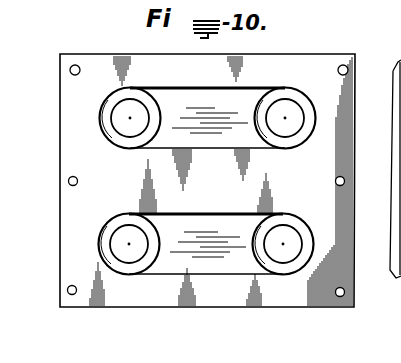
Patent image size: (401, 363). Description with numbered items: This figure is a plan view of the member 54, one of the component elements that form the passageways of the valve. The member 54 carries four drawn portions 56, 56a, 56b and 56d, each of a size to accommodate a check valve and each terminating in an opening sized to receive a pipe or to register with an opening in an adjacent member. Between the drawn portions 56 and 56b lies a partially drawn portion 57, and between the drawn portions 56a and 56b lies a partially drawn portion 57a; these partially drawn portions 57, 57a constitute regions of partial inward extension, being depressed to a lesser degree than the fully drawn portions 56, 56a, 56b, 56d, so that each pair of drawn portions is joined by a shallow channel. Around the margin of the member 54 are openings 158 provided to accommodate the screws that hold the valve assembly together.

The member 54 is at (313, 62).
The drawn portion 56 is at (276, 106).
The drawn portion 56a is at (287, 270).
The drawn portion 56b is at (123, 266).
The drawn portion 56d is at (106, 97).
The partially drawn portion 57 is at (207, 107).
The partially drawn portion 57a is at (201, 255).
The openings 158 is at (346, 65).